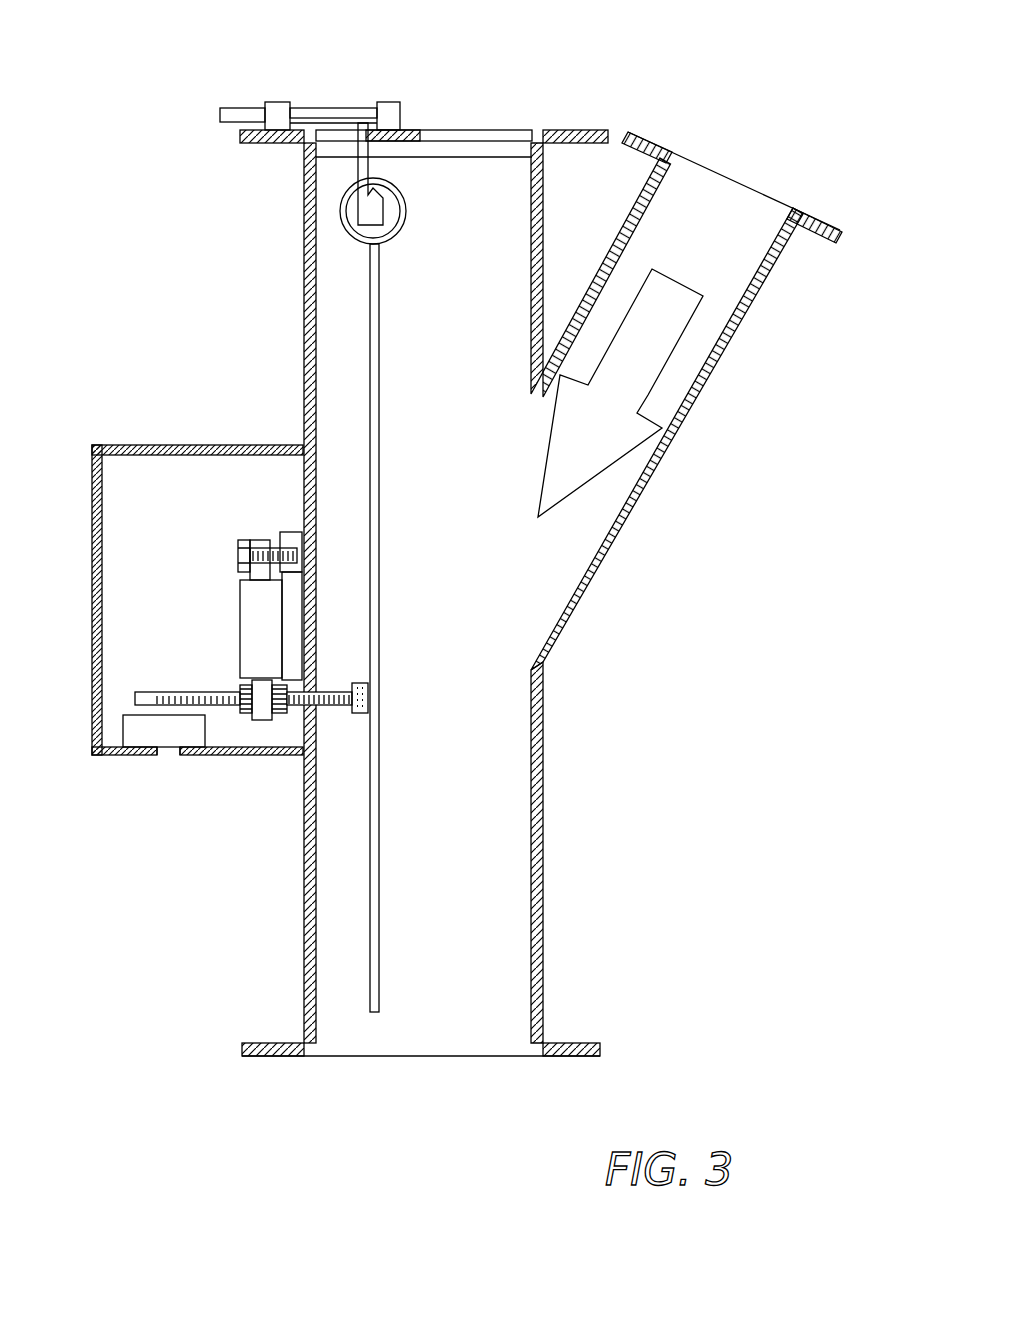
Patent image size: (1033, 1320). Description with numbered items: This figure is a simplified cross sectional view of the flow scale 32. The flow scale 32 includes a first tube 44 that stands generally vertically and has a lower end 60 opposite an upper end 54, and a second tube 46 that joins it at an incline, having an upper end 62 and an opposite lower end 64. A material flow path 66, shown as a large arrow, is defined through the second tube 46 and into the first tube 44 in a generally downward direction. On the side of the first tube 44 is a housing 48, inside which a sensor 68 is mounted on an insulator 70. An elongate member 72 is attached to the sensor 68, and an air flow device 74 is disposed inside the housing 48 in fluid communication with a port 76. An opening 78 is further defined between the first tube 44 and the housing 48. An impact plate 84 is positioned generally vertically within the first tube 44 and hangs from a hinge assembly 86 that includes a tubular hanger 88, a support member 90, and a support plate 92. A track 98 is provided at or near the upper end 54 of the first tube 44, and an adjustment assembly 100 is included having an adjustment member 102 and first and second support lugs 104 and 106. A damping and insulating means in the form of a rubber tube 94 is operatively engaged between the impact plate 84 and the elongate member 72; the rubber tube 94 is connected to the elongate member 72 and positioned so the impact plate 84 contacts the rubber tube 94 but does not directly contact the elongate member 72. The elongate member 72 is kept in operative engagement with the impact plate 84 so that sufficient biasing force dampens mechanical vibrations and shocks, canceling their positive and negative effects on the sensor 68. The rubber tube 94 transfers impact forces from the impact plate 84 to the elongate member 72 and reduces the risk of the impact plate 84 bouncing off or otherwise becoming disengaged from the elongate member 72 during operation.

The flow scale 32 is at (686, 438).
The first tube 44 is at (392, 607).
The second tube 46 is at (712, 412).
The housing 48 is at (190, 445).
The upper end 54 is at (545, 132).
The lower end 60 is at (533, 1057).
The upper end 62 is at (788, 210).
The lower end 64 is at (543, 663).
The material flow path 66 is at (676, 397).
The sensor 68 is at (240, 605).
The insulator 70 is at (290, 590).
The elongate member 72 is at (187, 692).
The air flow device 74 is at (133, 730).
The port 76 is at (177, 755).
The opening 78 is at (302, 708).
The impact plate 84 is at (383, 450).
The hinge assembly 86 is at (422, 226).
The tubular hanger 88 is at (407, 220).
The support member 90 is at (378, 220).
The support plate 92 is at (420, 130).
The rubber tube 94 is at (360, 690).
The track 98 is at (488, 145).
The adjustment assembly 100 is at (292, 70).
The adjustment member 102 is at (240, 108).
The first support lug 104 is at (268, 102).
The second support lug 106 is at (390, 102).